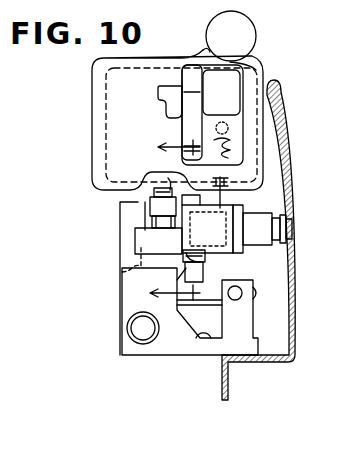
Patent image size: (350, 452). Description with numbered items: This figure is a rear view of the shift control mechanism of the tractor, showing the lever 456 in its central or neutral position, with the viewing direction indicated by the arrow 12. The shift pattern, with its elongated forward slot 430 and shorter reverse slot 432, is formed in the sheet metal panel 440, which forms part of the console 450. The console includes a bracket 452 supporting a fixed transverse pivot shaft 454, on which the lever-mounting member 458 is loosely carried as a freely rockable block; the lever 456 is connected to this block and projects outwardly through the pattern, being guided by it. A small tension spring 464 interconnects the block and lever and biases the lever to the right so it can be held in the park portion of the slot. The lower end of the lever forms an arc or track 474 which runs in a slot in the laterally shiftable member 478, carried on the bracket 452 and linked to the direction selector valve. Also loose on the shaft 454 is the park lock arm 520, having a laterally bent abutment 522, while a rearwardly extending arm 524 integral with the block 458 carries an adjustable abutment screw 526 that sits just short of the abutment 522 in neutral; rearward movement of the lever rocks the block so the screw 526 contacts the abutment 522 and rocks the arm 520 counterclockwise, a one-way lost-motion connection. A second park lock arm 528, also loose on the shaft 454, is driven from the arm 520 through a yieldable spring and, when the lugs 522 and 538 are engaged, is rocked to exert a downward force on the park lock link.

The direction arrow 12 is at (179, 141).
The elongated fore-and-aft slot 430 is at (222, 88).
The shorter slot 432 is at (168, 84).
The panel 440 is at (243, 64).
The console 450 is at (229, 390).
The bracket 452 is at (126, 283).
The pivot shaft 454 is at (291, 228).
The lever 456 is at (258, 30).
The lever-mounting member 458 is at (172, 180).
The tension spring 464 is at (228, 148).
The arc or track 474 is at (220, 268).
The laterally shiftable member 478 is at (257, 293).
The park lock arm 520 is at (232, 252).
The abutment 522 is at (160, 245).
The rearwardly extending arm 524 is at (150, 207).
The adjustable abutment screw 526 is at (157, 222).
The second park lock arm 528 is at (250, 205).
The lug 538 is at (244, 206).